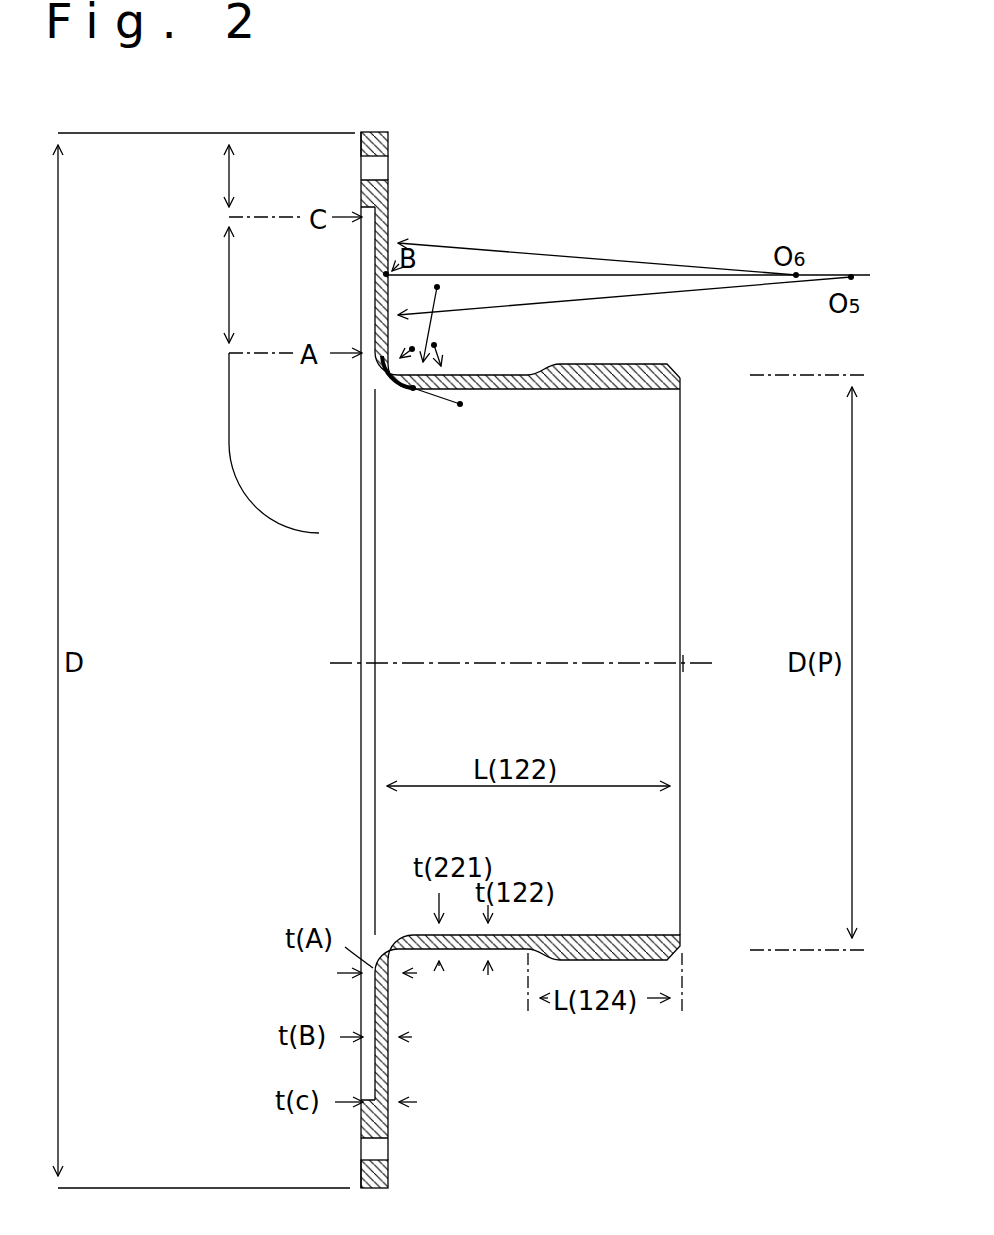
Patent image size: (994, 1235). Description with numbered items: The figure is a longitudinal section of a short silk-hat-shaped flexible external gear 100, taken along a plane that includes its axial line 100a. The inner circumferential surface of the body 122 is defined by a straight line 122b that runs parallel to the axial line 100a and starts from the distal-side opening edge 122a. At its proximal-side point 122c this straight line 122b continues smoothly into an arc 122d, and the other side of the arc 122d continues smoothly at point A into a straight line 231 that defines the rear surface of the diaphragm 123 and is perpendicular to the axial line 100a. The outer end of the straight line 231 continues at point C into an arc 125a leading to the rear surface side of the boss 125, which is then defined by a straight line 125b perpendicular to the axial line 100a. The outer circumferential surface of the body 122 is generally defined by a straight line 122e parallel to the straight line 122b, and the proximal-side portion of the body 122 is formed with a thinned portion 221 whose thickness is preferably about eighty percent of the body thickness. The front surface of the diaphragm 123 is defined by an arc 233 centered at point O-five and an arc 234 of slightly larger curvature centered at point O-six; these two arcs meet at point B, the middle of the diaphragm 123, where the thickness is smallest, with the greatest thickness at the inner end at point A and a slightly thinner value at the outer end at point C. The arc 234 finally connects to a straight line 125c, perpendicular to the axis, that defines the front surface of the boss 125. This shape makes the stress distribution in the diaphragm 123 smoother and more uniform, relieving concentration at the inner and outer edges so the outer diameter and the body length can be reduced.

The flexible external gear 100 is at (693, 184).
The axial line 100a is at (704, 668).
The body 122 is at (670, 533).
The distal-side opening edge 122a is at (684, 383).
The straight line 122b is at (546, 392).
The proximal-side point 122c is at (412, 400).
The arc 122d is at (387, 381).
The straight line 122e is at (497, 373).
The diaphragm 123 is at (280, 305).
The boss 125 is at (295, 170).
The arc 125a is at (372, 207).
The straight line 125b is at (360, 150).
The straight line 125c is at (388, 145).
The thinned portion 221 is at (433, 934).
The straight line 231 is at (375, 296).
The arc 233 is at (393, 296).
The arc 234 is at (392, 213).